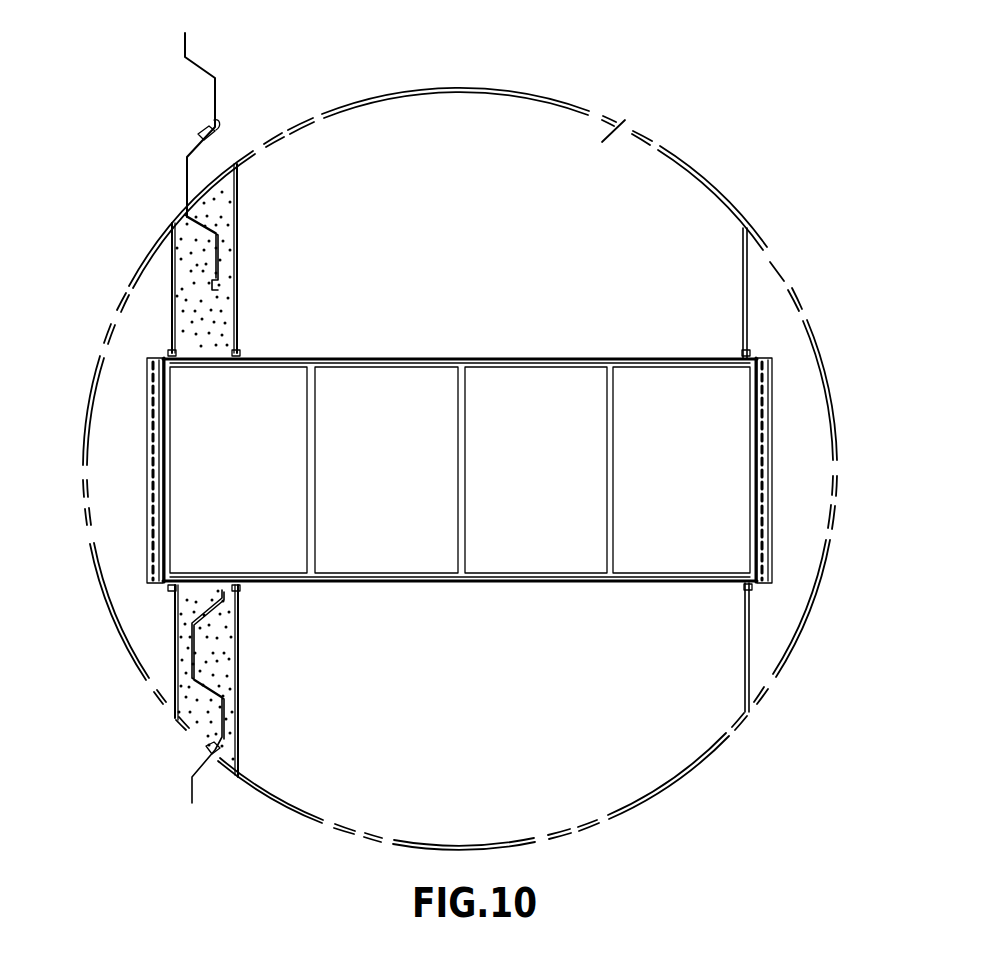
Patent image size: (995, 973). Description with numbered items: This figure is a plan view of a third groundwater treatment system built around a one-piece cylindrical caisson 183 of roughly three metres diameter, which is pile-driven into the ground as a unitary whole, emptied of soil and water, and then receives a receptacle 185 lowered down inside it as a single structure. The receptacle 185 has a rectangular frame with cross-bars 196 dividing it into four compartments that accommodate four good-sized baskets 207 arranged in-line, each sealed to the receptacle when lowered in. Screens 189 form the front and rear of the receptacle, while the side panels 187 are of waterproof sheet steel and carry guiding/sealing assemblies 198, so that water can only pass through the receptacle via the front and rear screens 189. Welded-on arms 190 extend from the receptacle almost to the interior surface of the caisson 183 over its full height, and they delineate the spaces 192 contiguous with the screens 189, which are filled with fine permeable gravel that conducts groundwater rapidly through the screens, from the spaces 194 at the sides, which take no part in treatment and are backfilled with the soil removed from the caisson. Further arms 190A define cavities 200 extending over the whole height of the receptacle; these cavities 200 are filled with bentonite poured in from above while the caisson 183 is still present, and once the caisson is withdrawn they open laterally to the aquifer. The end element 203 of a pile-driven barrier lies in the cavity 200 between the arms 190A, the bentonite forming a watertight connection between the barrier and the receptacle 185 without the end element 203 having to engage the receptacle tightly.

The caisson 183 is at (457, 90).
The spaces 194 is at (610, 128).
The spaces 192 is at (760, 278).
The end element 203 is at (187, 158).
The cavities 200 is at (237, 220).
The arms 190A is at (237, 300).
The arms 190 is at (743, 300).
The screens 189 is at (157, 470).
The receptacle 185 is at (608, 357).
The side panels 187 is at (583, 585).
The baskets 207 is at (352, 541).
The cross-bars 196 is at (613, 397).
The guiding/sealing assemblies 198 is at (701, 572).